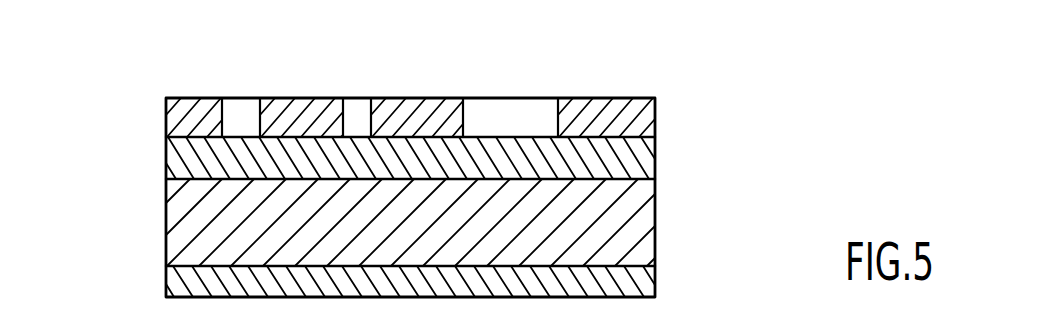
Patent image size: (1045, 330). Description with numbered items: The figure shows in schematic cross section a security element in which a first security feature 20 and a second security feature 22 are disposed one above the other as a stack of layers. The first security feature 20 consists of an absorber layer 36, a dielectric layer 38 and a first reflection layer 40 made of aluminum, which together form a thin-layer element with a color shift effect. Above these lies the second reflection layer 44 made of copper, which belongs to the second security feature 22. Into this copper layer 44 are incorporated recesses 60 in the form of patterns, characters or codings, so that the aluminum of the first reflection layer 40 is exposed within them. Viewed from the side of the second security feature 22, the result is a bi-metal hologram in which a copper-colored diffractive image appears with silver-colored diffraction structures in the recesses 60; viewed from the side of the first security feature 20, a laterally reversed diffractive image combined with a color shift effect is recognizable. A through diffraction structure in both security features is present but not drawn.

The first security feature 20 is at (118, 148).
The second security feature 22 is at (117, 93).
The absorber layer 36 is at (642, 275).
The dielectric layer 38 is at (642, 213).
The first reflection layer 40 is at (651, 157).
The second reflection layer 44 is at (655, 102).
The recesses 60 is at (512, 112).